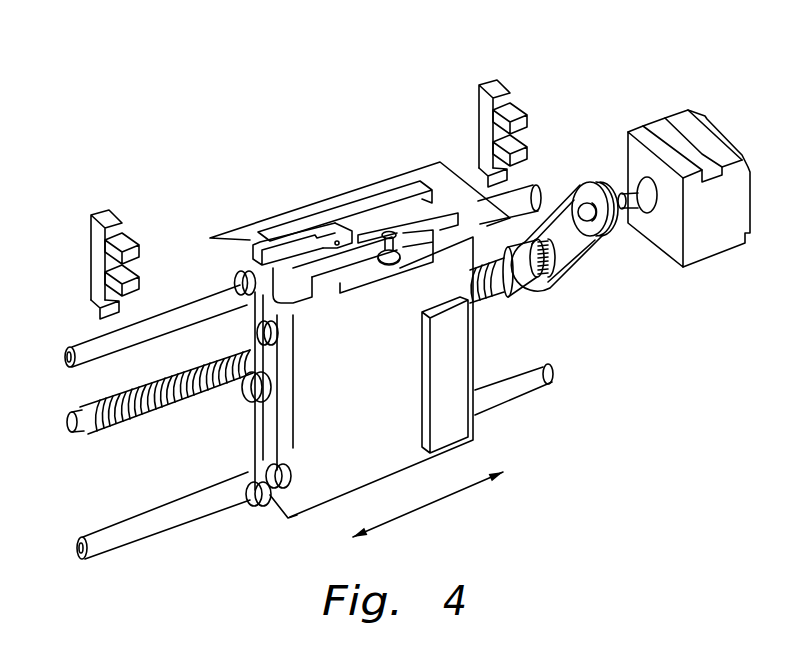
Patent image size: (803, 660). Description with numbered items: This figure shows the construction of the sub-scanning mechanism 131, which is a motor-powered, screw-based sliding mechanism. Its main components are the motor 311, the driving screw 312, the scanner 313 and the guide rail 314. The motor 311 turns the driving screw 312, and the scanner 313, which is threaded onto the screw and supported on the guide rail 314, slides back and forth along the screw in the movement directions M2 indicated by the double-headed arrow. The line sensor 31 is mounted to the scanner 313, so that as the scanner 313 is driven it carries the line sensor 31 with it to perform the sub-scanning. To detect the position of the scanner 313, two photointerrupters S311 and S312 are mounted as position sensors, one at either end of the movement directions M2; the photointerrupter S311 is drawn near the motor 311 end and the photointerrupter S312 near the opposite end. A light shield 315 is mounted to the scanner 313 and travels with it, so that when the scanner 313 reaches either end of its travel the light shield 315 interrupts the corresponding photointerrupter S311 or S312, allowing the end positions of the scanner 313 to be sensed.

The sub-scanning mechanism 131 is at (173, 87).
The photointerrupter S312 is at (104, 212).
The photointerrupter S311 is at (490, 84).
The motor 311 is at (712, 136).
The line sensor 31 is at (462, 352).
The light shield 315 is at (297, 215).
The scanner 313 is at (378, 401).
The guide rail 314 is at (85, 342).
The driving screw 312 is at (162, 410).
The movement directions M2 is at (428, 509).